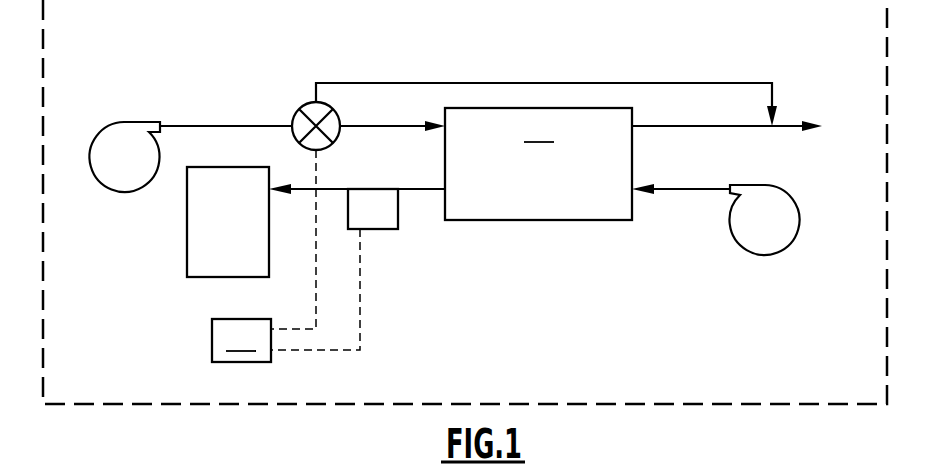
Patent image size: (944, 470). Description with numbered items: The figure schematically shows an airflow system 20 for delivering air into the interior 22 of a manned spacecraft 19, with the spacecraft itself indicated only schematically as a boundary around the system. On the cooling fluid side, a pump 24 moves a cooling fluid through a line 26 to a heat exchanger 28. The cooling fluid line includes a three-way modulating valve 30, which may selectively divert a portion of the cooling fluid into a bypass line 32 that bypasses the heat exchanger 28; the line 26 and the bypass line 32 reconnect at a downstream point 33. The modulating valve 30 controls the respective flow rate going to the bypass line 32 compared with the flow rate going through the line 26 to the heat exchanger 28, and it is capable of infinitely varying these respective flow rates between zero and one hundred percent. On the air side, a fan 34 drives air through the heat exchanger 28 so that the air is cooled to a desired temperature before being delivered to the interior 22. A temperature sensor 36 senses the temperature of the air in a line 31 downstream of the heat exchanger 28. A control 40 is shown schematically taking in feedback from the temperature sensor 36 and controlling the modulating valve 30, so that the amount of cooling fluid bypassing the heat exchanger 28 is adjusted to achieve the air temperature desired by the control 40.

The manned spacecraft 19 is at (101, 404).
The airflow system 20 is at (792, 50).
The interior 22 is at (207, 232).
The pump 24 is at (111, 137).
The line 26 is at (368, 128).
The heat exchanger 28 is at (538, 164).
The three-way modulating valve 30 is at (338, 117).
The line 31 is at (421, 191).
The bypass line 32 is at (361, 83).
The downstream point 33 is at (776, 125).
The fan 34 is at (751, 238).
The temperature sensor 36 is at (384, 230).
The control 40 is at (286, 256).